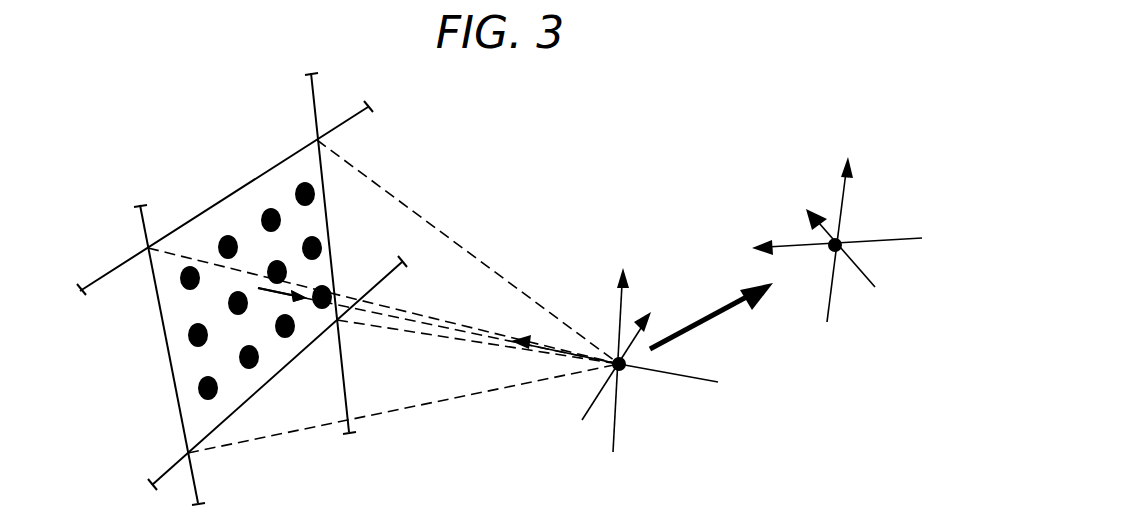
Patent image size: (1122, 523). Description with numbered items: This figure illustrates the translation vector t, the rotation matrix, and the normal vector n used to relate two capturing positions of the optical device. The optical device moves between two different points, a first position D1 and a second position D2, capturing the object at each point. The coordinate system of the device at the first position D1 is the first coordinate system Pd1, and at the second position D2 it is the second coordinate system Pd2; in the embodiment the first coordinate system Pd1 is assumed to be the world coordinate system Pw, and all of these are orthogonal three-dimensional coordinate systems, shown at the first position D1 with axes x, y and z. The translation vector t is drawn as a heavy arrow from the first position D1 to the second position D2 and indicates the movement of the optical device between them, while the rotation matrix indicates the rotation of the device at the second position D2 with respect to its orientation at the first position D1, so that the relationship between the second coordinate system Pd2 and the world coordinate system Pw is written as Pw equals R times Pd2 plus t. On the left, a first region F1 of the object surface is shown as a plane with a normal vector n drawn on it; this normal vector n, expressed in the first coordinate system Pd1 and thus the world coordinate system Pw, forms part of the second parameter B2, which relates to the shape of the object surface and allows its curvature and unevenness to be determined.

The first region F1 is at (243, 200).
The normal vector n is at (280, 297).
The second parameter B2 is at (282, 295).
The first position D1 is at (624, 372).
The second position D2 is at (841, 240).
The translation vector t is at (712, 323).
The first coordinate system Pd1 is at (647, 222).
The world coordinate system Pw is at (744, 193).
The second coordinate system Pd2 is at (893, 138).
The x axis x is at (657, 306).
The y axis y is at (512, 364).
The z axis z is at (630, 274).